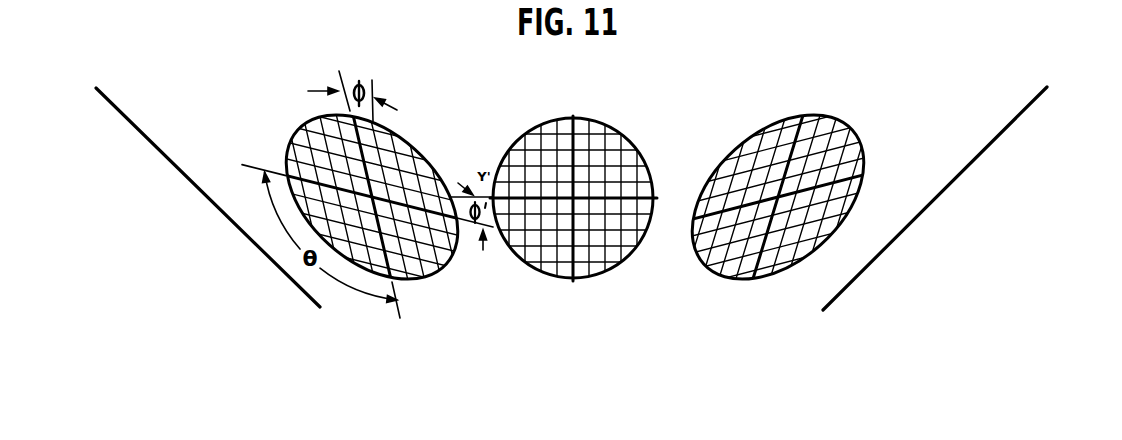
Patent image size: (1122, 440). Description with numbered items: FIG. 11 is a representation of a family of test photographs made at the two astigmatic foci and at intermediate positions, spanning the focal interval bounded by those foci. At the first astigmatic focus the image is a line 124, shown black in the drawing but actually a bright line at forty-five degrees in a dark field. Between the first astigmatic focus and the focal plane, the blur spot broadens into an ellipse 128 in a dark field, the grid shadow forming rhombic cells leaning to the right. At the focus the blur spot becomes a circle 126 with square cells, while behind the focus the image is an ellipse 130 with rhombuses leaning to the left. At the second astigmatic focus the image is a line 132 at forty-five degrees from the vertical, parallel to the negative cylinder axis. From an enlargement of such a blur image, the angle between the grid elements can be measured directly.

The line 124 is at (998, 137).
The circle 126 is at (628, 142).
The ellipse 128 is at (857, 142).
The ellipse 130 is at (403, 145).
The line 132 is at (143, 133).